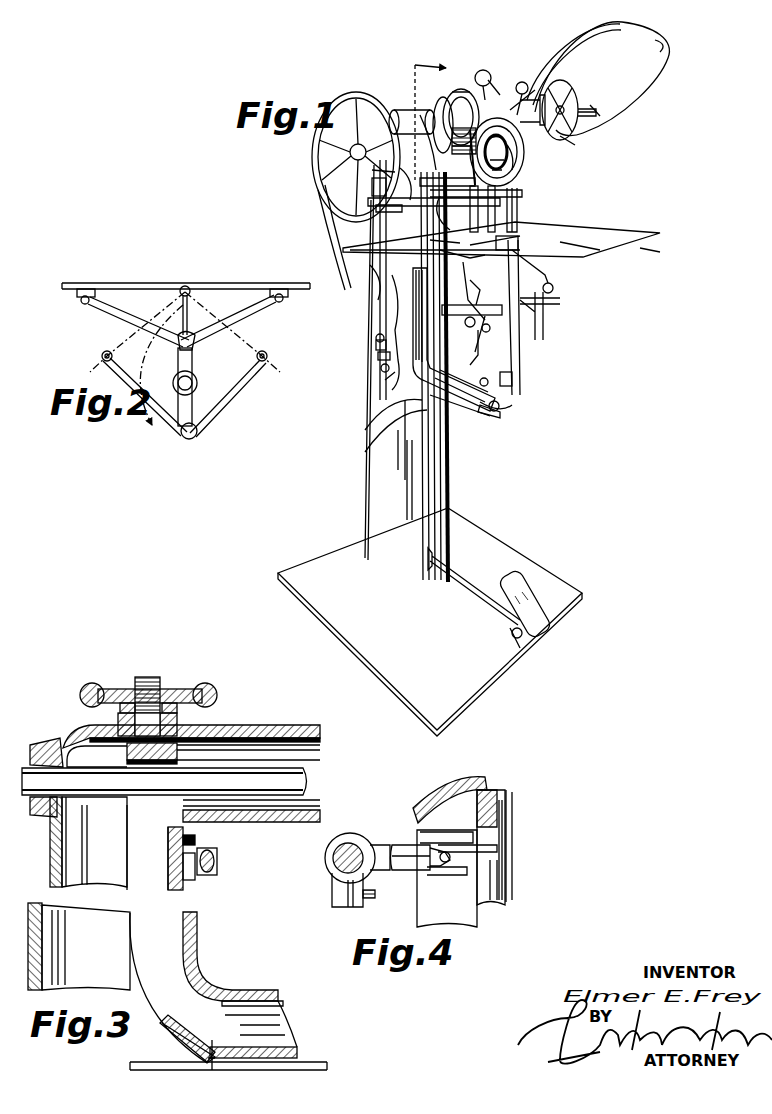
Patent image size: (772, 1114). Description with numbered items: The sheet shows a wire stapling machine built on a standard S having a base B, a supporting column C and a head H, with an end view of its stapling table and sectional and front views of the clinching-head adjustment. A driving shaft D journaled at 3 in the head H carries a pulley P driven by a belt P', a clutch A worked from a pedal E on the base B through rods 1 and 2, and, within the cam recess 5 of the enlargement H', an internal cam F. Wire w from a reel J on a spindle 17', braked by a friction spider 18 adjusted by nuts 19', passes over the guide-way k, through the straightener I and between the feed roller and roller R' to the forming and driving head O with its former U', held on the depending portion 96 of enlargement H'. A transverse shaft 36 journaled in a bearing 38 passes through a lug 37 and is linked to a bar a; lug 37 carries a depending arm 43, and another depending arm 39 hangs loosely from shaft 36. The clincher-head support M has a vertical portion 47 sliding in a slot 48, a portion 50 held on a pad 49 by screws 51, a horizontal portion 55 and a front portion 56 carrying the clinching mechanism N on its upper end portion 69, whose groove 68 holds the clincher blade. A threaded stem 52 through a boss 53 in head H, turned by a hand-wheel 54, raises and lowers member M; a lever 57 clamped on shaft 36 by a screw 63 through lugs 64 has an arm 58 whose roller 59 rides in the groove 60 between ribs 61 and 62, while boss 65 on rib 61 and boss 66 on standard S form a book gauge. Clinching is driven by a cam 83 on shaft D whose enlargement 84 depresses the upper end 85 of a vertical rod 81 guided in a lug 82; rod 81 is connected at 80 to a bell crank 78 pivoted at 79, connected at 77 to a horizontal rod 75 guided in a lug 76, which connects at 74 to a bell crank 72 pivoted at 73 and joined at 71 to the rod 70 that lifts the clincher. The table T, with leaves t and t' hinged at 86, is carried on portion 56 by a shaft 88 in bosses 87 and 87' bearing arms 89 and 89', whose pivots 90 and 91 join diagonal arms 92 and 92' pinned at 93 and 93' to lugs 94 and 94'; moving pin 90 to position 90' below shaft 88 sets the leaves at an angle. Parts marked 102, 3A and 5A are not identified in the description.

In FIG. 1, the pulley P is at (356, 146).
In FIG. 1, the clutch A is at (354, 148).
In FIG. 3, the clutch A is at (232, 850).
In FIG. 1, the peripheral enlargement 84 is at (409, 110).
In FIG. 1, the bar a is at (425, 116).
In FIG. 1, the belt P' is at (316, 221).
In FIG. 1, the cam 83 is at (372, 172).
In FIG. 1, the lug 82 is at (372, 188).
In FIG. 1, the bearing 38 is at (380, 205).
In FIG. 1, the lever 57 is at (376, 210).
In FIG. 4, the lever 57 is at (380, 846).
In FIG. 1, the standard S is at (388, 407).
In FIG. 3, the standard S is at (50, 857).
In FIG. 4, the standard S is at (500, 878).
In FIG. 1, the journal 3 is at (440, 428).
In FIG. 3, the journal 3 is at (58, 740).
In FIG. 1, the hand-wheel 54 is at (436, 112).
In FIG. 1, the roller R' is at (443, 122).
In FIG. 1, the supporting column C is at (454, 121).
In FIG. 1, the internal cam F is at (480, 96).
In FIG. 1, the straightener I is at (518, 88).
In FIG. 1, the enlargement H' is at (507, 152).
In FIG. 1, the guide 102 is at (524, 170).
In FIG. 1, the cam recess 5 is at (516, 180).
In FIG. 1, the depending portion 96 is at (522, 192).
In FIG. 1, the forming and driving head O is at (482, 215).
In FIG. 1, the former U' is at (517, 209).
In FIG. 1, the reel J is at (566, 96).
In FIG. 1, the friction spider 18 is at (578, 108).
In FIG. 1, the spindle 17' is at (603, 97).
In FIG. 1, the nuts 19' is at (586, 130).
In FIG. 1, the wire w is at (660, 67).
In FIG. 1, the guide-way k is at (575, 52).
In FIG. 1, the table leaf t is at (501, 223).
In FIG. 2, the table leaf t is at (181, 317).
In FIG. 1, the table T is at (592, 240).
In FIG. 1, the table leaf t' is at (654, 249).
In FIG. 2, the table leaf t' is at (238, 313).
In FIG. 1, the rod 2 is at (645, 238).
In FIG. 1, the upper end of rod 85 is at (399, 174).
In FIG. 1, the arm 3A is at (447, 170).
In FIG. 1, the lug 37 is at (420, 200).
In FIG. 1, the depending arm 43 is at (440, 210).
In FIG. 1, the depending arm 39 is at (435, 252).
In FIG. 1, the vertical rod 81 is at (372, 272).
In FIG. 1, the hinge points 86 is at (385, 283).
In FIG. 2, the hinge points 86 is at (185, 310).
In FIG. 1, the pivot connection 80 is at (377, 335).
In FIG. 1, the pivot 79 is at (376, 342).
In FIG. 1, the bell crank 78 is at (378, 355).
In FIG. 1, the pivot connection 77 is at (381, 368).
In FIG. 1, the horizontal rod 75 is at (384, 380).
In FIG. 3, the horizontal rod 75 is at (300, 1060).
In FIG. 1, the pad 49 is at (383, 419).
In FIG. 1, the screws 51 is at (386, 434).
In FIG. 1, the portion of member M 50 is at (386, 450).
In FIG. 1, the clincher head support M is at (482, 343).
In FIG. 3, the clincher head support M is at (200, 920).
In FIG. 4, the clincher head support M is at (480, 910).
In FIG. 1, the vertical portion 56 is at (520, 345).
In FIG. 1, the horizontal portion 55 is at (500, 365).
In FIG. 3, the horizontal portion 55 is at (258, 990).
In FIG. 1, the pivot 73 is at (512, 378).
In FIG. 1, the connection point 71 is at (514, 388).
In FIG. 1, the bell crank 72 is at (512, 406).
In FIG. 1, the pivot connection 74 is at (498, 412).
In FIG. 1, the upper end portion 69 is at (462, 260).
In FIG. 1, the groove 68 is at (468, 283).
In FIG. 1, the pivot connection 91 is at (475, 292).
In FIG. 1, the vertical portion 47 is at (472, 308).
In FIG. 3, the vertical portion 47 is at (168, 853).
In FIG. 1, the arm 89 is at (463, 320).
In FIG. 1, the shaft 88 is at (482, 330).
In FIG. 2, the shaft 88 is at (192, 390).
In FIG. 1, the slot 48 is at (475, 334).
In FIG. 1, the boss 87 is at (484, 349).
In FIG. 1, the clinching mechanism N is at (513, 244).
In FIG. 1, the pivot pin 90 is at (553, 266).
In FIG. 2, the pivot pin 90 is at (205, 339).
In FIG. 1, the rod 70 is at (554, 286).
In FIG. 1, the arm 89' is at (566, 297).
In FIG. 2, the arm 89' is at (207, 386).
In FIG. 1, the boss 87' is at (552, 316).
In FIG. 1, the base B is at (415, 618).
In FIG. 1, the rod 1 is at (477, 578).
In FIG. 1, the pedal E is at (535, 590).
In FIG. 2, the depending lug 94 is at (90, 278).
In FIG. 2, the depending lug 94' is at (271, 278).
In FIG. 2, the pivot point 93 is at (67, 306).
In FIG. 2, the pivot point 93' is at (297, 297).
In FIG. 2, the diagonal arm 92 is at (128, 322).
In FIG. 2, the diagonal arm 92' is at (236, 321).
In FIG. 2, the pin position 90' is at (168, 383).
In FIG. 3, the wing handle 5A is at (190, 690).
In FIG. 3, the threaded stem 52 is at (152, 677).
In FIG. 3, the threaded boss 53 is at (180, 716).
In FIG. 3, the head H is at (191, 763).
In FIG. 4, the head H is at (450, 799).
In FIG. 3, the driving shaft D is at (110, 792).
In FIG. 3, the upper rib 61 is at (190, 842).
In FIG. 4, the upper rib 61 is at (441, 891).
In FIG. 3, the rib 62 is at (183, 866).
In FIG. 4, the rib 62 is at (437, 871).
In FIG. 3, the roller 59 is at (215, 848).
In FIG. 4, the roller 59 is at (500, 846).
In FIG. 3, the horizontal arm 58 is at (218, 861).
In FIG. 4, the horizontal arm 58 is at (438, 858).
In FIG. 3, the lug 76 is at (212, 1045).
In FIG. 4, the transverse shaft 36 is at (352, 845).
In FIG. 4, the lugs 64 is at (362, 905).
In FIG. 4, the screw 63 is at (376, 896).
In FIG. 4, the groove 60 is at (452, 856).
In FIG. 4, the boss 66 is at (509, 790).
In FIG. 4, the boss 65 is at (503, 815).